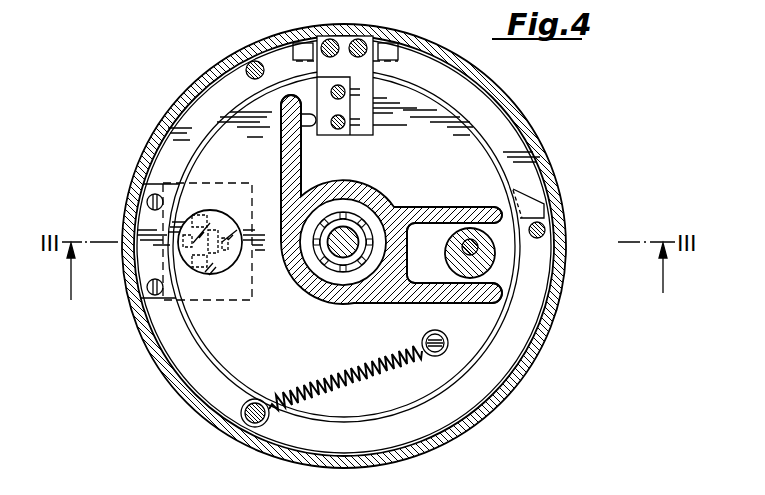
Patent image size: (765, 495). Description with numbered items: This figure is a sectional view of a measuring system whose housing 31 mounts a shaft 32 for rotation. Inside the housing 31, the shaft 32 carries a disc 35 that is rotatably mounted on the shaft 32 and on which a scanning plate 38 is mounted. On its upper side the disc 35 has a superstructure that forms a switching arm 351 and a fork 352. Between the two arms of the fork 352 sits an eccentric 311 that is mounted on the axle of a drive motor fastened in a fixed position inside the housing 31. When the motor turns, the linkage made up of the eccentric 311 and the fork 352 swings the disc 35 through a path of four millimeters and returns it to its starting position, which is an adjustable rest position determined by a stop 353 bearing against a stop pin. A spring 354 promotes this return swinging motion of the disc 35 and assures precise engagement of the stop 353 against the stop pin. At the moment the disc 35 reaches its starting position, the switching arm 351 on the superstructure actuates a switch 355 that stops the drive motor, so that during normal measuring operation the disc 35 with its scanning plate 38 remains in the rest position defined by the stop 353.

The housing 31 is at (525, 110).
The eccentric 311 is at (493, 265).
The shaft 32 is at (358, 256).
The disc 35 is at (362, 199).
The switching arm 351 is at (287, 167).
The fork 352 is at (442, 207).
The stop 353 is at (534, 208).
The spring 354 is at (328, 377).
The switch 355 is at (327, 126).
The scanning plate 38 is at (218, 260).